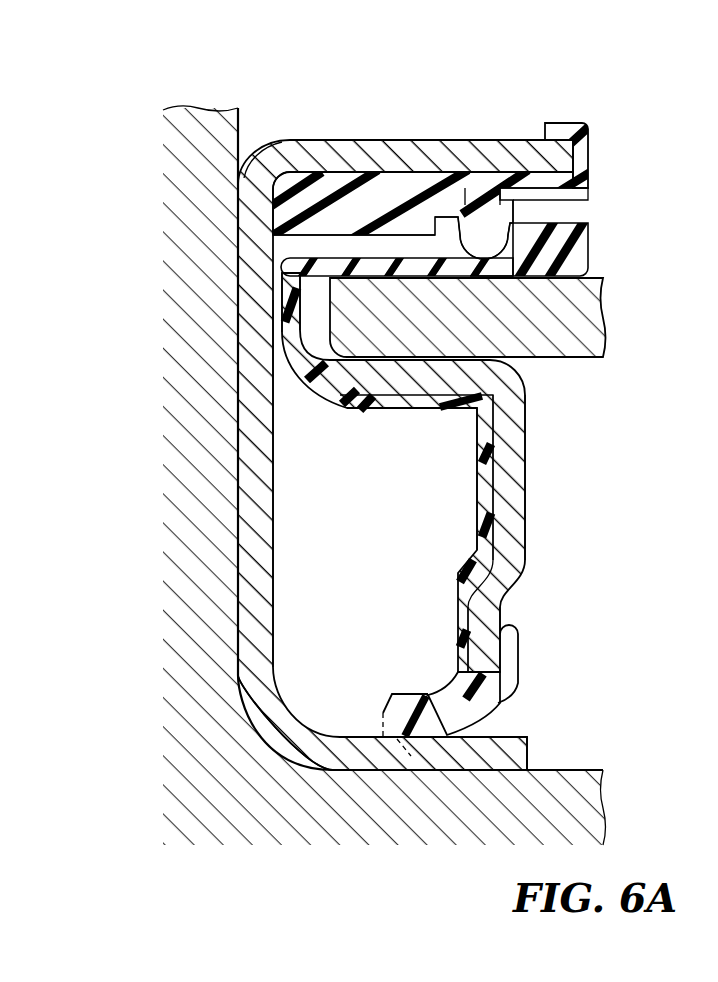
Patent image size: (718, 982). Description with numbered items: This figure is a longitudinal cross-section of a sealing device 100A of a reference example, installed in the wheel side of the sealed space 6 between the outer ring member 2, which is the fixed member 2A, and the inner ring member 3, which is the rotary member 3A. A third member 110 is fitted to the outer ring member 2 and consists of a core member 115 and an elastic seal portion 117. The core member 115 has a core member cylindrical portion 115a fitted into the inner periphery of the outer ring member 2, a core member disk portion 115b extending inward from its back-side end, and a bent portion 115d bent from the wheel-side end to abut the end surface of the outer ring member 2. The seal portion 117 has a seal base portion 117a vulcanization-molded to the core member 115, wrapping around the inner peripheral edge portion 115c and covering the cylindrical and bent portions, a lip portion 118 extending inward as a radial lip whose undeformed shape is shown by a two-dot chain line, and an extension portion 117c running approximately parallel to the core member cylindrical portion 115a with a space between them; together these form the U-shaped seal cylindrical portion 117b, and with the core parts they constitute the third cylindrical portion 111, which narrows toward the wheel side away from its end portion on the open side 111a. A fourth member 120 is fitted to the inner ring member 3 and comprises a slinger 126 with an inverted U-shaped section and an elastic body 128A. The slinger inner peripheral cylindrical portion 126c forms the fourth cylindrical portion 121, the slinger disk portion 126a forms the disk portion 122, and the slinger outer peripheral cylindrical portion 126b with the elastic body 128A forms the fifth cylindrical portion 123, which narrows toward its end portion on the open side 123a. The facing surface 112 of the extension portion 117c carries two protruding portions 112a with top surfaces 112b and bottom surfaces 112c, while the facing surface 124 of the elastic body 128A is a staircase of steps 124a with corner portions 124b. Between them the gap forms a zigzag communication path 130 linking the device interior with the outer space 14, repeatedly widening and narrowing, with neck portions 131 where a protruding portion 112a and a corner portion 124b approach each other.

The outer ring member 2 is at (507, 317).
The fixed member 2A is at (568, 312).
The inner ring member 3 is at (344, 475).
The rotary member 3A is at (213, 760).
The sealed space 6 is at (382, 459).
The outer space 14 is at (382, 459).
The sealing device 100A is at (555, 747).
The third member 110 is at (389, 392).
The third cylindrical portion 111 is at (390, 402).
The end portion on the open side 111a is at (600, 250).
The facing surface 112 is at (389, 279).
The protruding portion 112a is at (523, 207).
The top surface 112b is at (540, 193).
The bottom surface 112c is at (515, 277).
The core member 115 is at (361, 488).
The core member cylindrical portion 115a is at (382, 375).
The core member disk portion 115b is at (510, 468).
The inner peripheral edge portion 115c is at (486, 652).
The bent portion 115d is at (312, 338).
The seal portion 117 is at (398, 392).
The seal base portion 117a is at (487, 485).
The seal cylindrical portion 117b is at (270, 122).
The extension portion 117c is at (563, 260).
The lip portion 118 is at (450, 700).
The fourth member 120 is at (362, 459).
The fourth cylindrical portion 121 is at (433, 812).
The disk portion 122 is at (194, 535).
The fifth cylindrical portion 123 is at (391, 145).
The end portion on the open side 123a is at (587, 157).
The facing surface 124 is at (524, 156).
The step 124a is at (465, 187).
The corner portion 124b is at (500, 190).
The slinger 126 is at (314, 513).
The slinger disk portion 126a is at (258, 570).
The slinger outer peripheral cylindrical portion 126b is at (332, 157).
The slinger inner peripheral cylindrical portion 126c is at (375, 752).
The elastic body 128A is at (372, 177).
The communication path 130 is at (403, 247).
The neck portion 131 is at (505, 183).